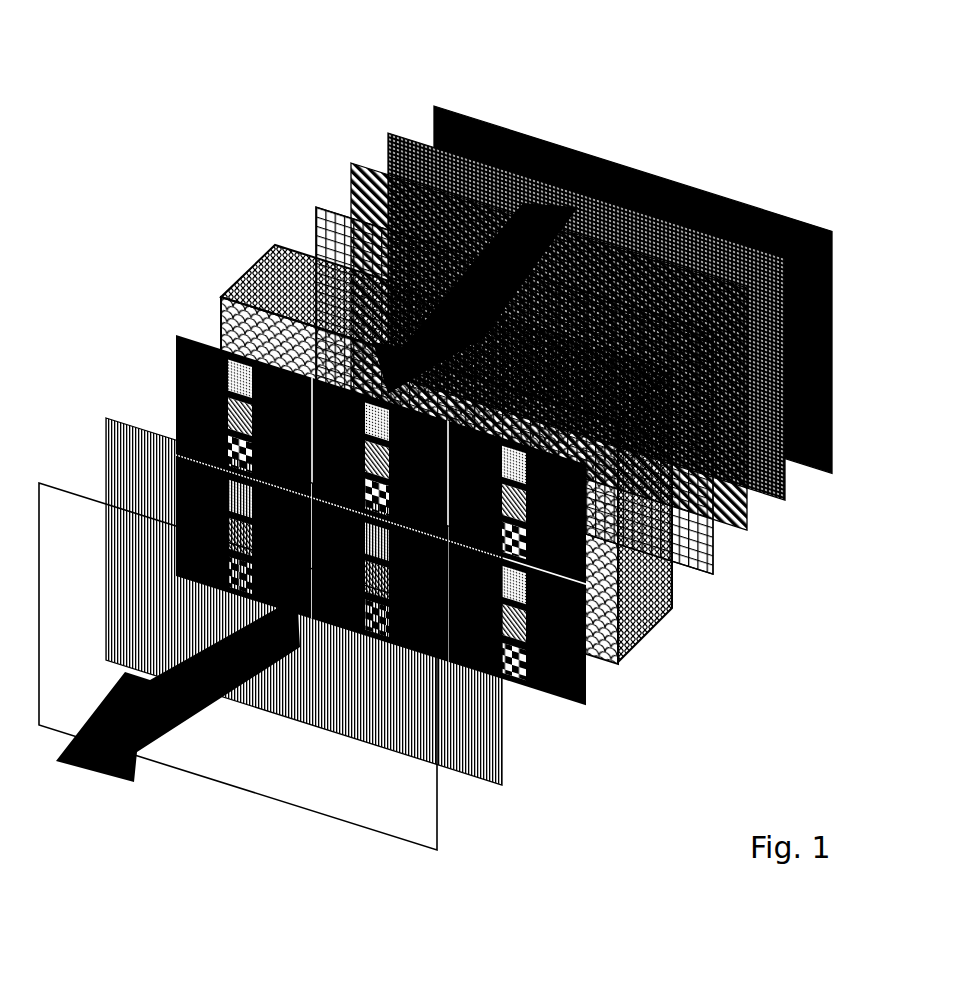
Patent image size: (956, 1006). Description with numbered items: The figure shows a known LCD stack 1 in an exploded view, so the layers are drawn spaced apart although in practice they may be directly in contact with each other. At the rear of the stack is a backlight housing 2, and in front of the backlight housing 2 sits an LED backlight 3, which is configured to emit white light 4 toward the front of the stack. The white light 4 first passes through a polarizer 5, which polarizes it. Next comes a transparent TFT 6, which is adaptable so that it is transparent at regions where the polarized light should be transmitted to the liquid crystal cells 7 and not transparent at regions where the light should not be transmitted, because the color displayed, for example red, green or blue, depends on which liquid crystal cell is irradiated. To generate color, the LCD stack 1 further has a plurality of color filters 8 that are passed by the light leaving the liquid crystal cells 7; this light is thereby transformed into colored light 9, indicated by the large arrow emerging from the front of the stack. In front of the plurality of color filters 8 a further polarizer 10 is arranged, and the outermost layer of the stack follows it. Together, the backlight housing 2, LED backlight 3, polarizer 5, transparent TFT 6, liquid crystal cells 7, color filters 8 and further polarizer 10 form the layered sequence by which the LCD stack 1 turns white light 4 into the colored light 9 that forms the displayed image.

The LCD stack 1 is at (423, 58).
The backlight housing 2 is at (662, 173).
The LED backlight 3 is at (410, 137).
The white light 4 is at (478, 254).
The polarizer 5 is at (747, 510).
The transparent TFT 6 is at (692, 562).
The liquid crystal cells 7 is at (640, 640).
The color filters 8 is at (190, 338).
The colored light 9 is at (92, 772).
The further polarizer 10 is at (503, 733).